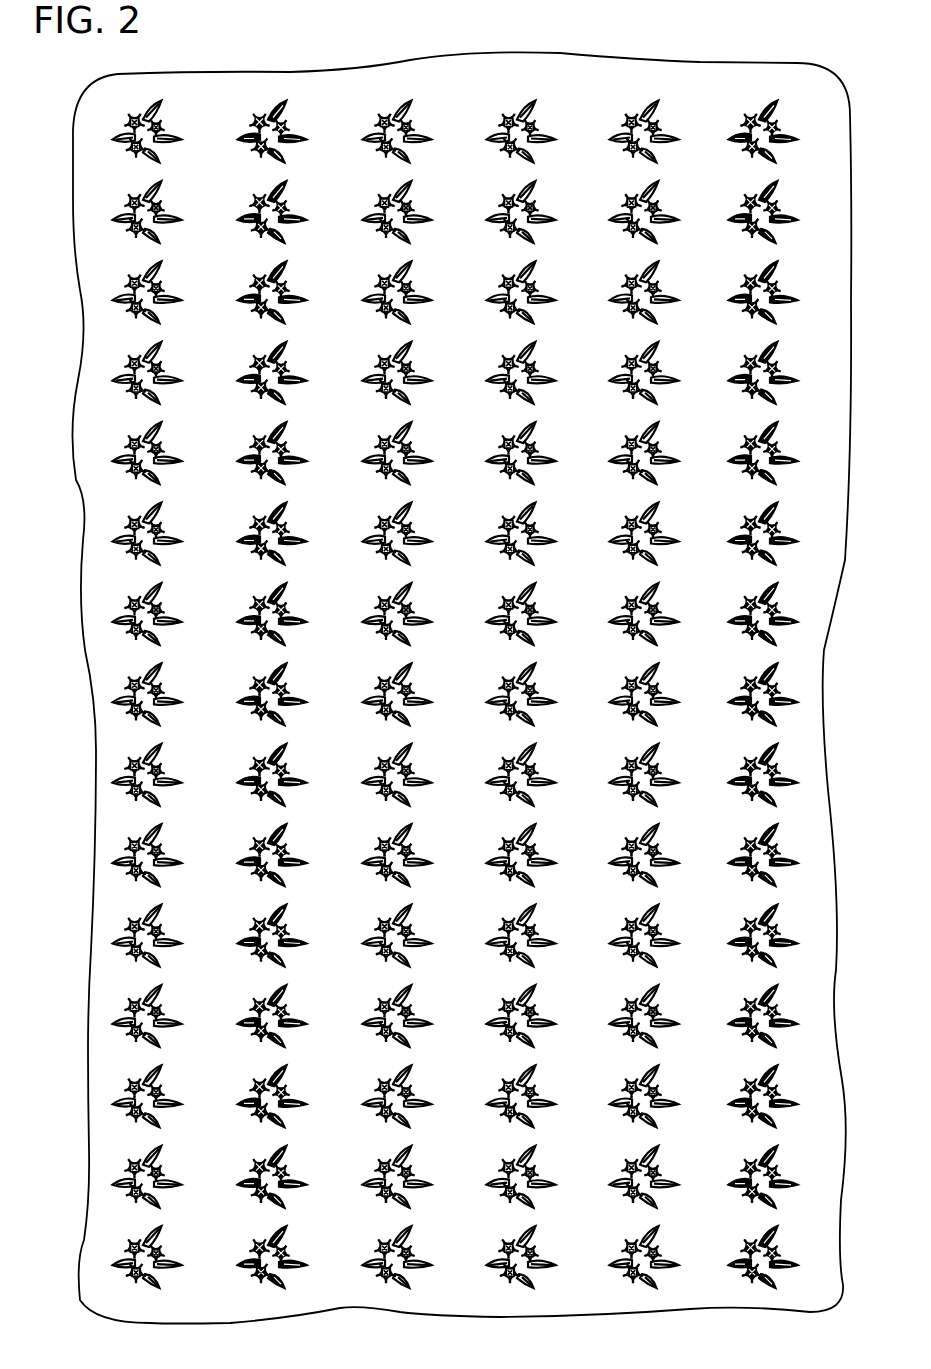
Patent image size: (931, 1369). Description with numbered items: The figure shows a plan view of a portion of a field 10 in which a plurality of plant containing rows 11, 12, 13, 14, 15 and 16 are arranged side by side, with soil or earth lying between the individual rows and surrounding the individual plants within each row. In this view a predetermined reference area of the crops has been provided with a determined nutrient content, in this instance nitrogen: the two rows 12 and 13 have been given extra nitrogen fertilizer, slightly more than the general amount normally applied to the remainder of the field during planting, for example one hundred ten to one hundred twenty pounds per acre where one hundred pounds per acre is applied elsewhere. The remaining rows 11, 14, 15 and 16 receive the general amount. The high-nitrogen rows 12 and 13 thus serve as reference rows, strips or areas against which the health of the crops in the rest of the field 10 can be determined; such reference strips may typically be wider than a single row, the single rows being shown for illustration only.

The field 10 is at (472, 103).
The plant containing row 11 is at (145, 98).
The plant containing row 12 is at (270, 96).
The plant containing row 13 is at (755, 96).
The plant containing row 14 is at (393, 98).
The plant containing row 15 is at (512, 98).
The plant containing row 16 is at (635, 98).